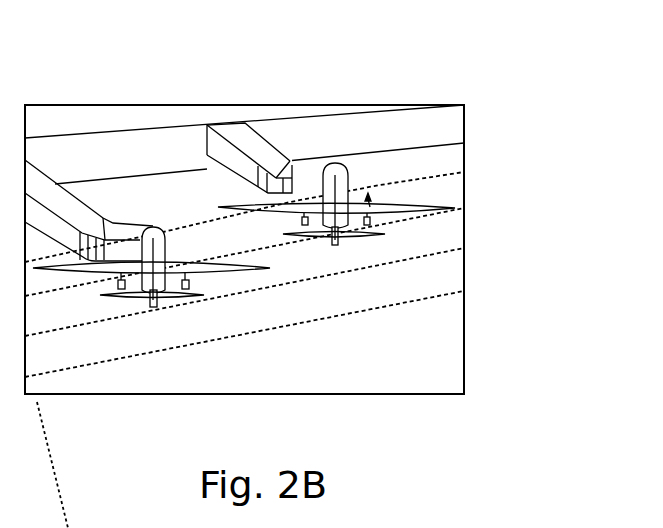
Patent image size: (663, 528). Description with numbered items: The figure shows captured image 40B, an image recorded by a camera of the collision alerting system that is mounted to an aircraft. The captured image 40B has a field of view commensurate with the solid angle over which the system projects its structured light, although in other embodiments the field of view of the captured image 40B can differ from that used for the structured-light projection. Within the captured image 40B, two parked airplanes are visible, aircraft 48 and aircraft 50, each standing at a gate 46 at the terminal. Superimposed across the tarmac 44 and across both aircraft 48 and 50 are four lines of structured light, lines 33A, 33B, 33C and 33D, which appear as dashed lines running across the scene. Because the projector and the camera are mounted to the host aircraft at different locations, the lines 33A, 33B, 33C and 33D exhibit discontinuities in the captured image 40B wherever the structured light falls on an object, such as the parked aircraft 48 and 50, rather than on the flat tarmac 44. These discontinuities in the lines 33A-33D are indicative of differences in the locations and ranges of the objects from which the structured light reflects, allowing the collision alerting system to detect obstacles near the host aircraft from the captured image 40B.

The captured image 40B is at (244, 201).
The line of structured light 33A is at (477, 284).
The line of structured light 33B is at (477, 243).
The line of structured light 33C is at (477, 197).
The line of structured light 33D is at (477, 160).
The tarmac 44 is at (320, 358).
The gate 46 is at (369, 165).
The aircraft 48 is at (164, 317).
The aircraft 50 is at (345, 253).